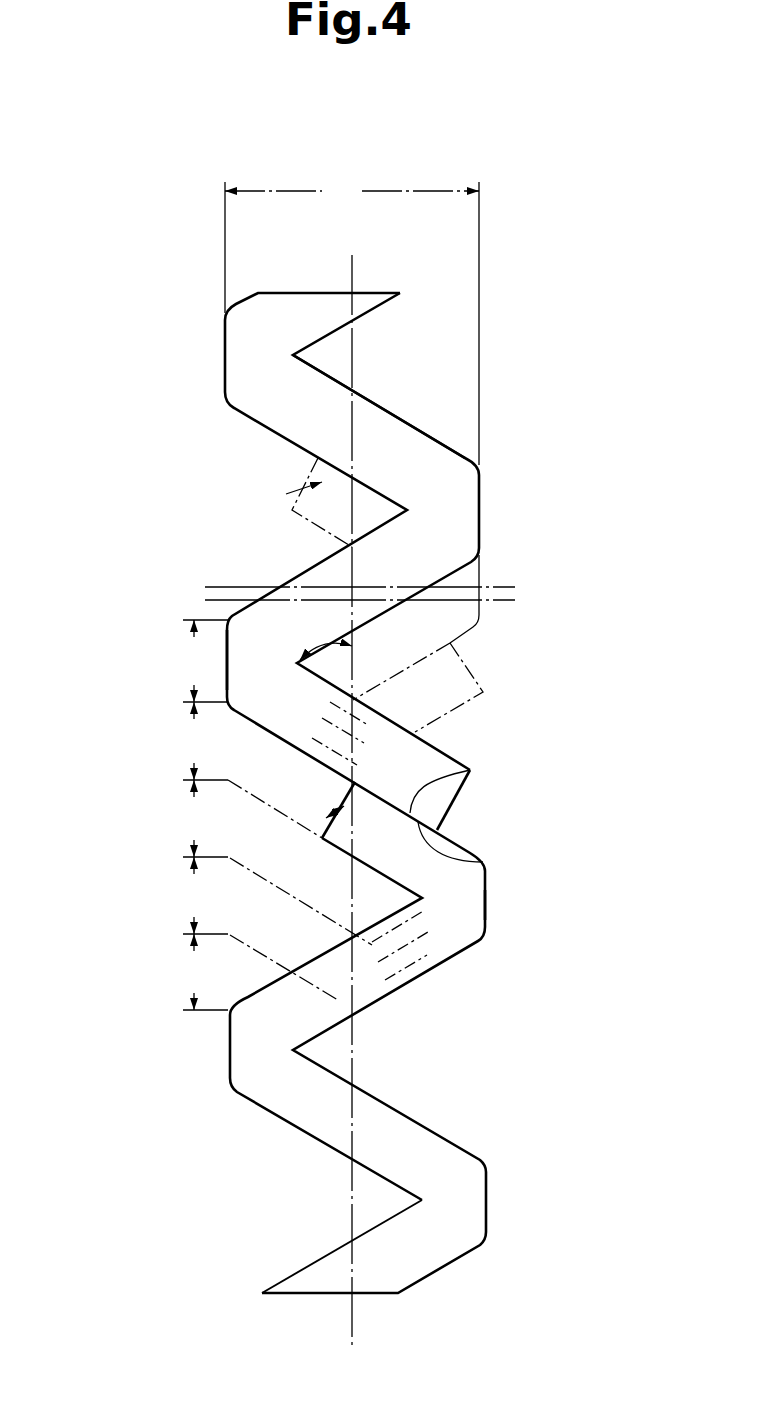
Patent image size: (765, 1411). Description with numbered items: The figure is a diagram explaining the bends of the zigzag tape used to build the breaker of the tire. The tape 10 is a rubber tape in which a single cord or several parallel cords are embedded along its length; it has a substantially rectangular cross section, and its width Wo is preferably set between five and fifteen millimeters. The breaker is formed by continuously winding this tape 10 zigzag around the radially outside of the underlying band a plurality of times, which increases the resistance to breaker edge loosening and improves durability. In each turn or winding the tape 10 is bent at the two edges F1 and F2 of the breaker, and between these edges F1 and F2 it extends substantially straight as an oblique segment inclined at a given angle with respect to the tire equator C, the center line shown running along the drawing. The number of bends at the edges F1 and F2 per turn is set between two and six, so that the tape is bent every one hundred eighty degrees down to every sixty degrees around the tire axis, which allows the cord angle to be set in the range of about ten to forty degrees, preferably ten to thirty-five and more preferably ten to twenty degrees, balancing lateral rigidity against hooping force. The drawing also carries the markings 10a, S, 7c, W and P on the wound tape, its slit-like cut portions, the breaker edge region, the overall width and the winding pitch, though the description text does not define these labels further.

The tape 10 is at (447, 742).
The cut tab portion of fin 10a is at (470, 770).
The slit S is at (457, 797).
The forming die edge 7c is at (227, 674).
The breaker edge F1 is at (227, 637).
The breaker edge F2 is at (485, 903).
The overall width W is at (352, 321).
The tape width Wo is at (413, 429).
The pitch P is at (205, 815).
The tire equator C is at (352, 272).